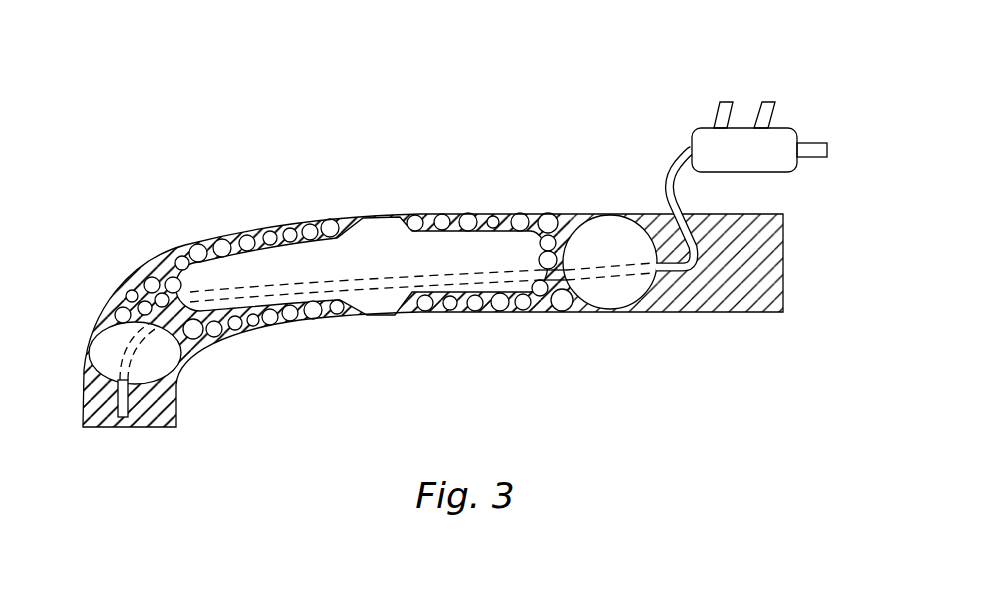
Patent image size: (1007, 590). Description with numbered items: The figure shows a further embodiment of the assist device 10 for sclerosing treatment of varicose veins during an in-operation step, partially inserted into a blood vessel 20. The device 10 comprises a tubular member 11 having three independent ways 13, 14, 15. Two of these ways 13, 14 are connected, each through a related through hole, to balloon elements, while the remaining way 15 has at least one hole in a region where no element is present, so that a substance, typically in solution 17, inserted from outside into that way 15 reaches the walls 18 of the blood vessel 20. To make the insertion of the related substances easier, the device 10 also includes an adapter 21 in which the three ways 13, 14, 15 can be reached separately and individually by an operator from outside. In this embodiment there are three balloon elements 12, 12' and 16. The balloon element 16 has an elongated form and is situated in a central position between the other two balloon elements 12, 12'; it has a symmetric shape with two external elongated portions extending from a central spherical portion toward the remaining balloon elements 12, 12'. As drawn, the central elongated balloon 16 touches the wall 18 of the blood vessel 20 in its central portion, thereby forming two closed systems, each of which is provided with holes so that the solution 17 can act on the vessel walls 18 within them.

The assist device 10 is at (449, 172).
The tubular member 11 is at (665, 170).
The balloon element 12 is at (110, 337).
The balloon element 12' is at (610, 222).
The way 13 is at (725, 100).
The way 14 is at (768, 100).
The way 15 is at (811, 140).
The elongated balloon element 16 is at (378, 295).
The substance in solution 17 is at (173, 285).
The walls of the blood vessel 18 is at (285, 222).
The blood vessel 20 is at (664, 326).
The adapter 21 is at (708, 147).